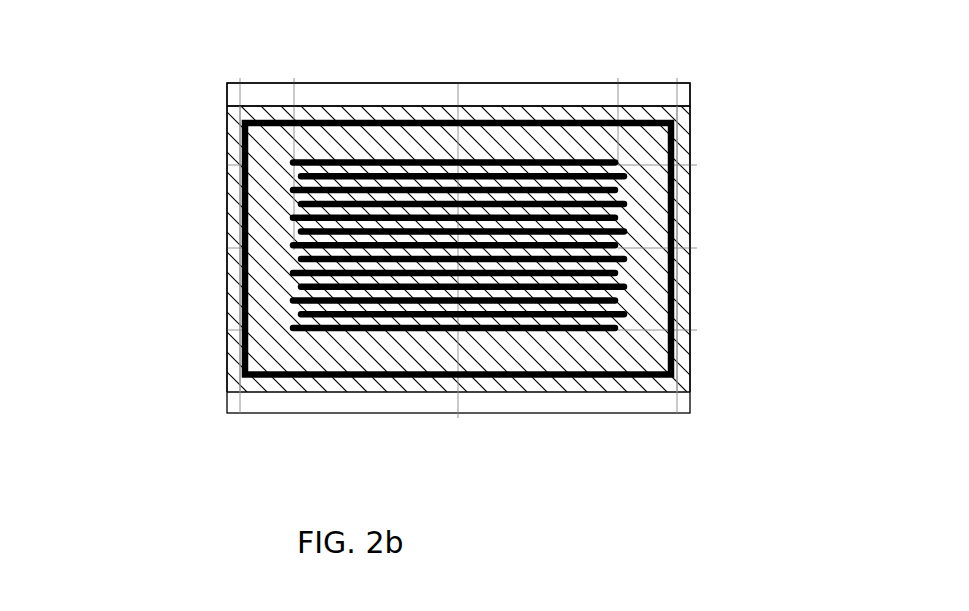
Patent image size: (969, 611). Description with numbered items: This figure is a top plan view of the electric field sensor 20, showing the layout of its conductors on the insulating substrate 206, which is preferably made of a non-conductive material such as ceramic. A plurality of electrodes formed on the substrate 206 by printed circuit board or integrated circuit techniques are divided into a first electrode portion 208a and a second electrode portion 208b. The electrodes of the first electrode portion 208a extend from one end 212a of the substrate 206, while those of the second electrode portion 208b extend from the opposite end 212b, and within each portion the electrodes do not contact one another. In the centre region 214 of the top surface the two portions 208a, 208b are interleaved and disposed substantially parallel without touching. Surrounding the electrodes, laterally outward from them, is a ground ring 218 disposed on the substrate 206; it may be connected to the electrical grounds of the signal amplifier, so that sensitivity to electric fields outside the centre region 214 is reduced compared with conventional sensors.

The antenna device 20 is at (213, 477).
The insulating substrate 206 is at (441, 76).
The first electrode portion 208a is at (290, 190).
The second electrode portion 208b is at (627, 178).
The one end of the substrate 212a is at (224, 356).
The opposite end of the substrate 212b is at (697, 350).
The centre region 214 is at (532, 340).
The ground ring 218 is at (665, 112).